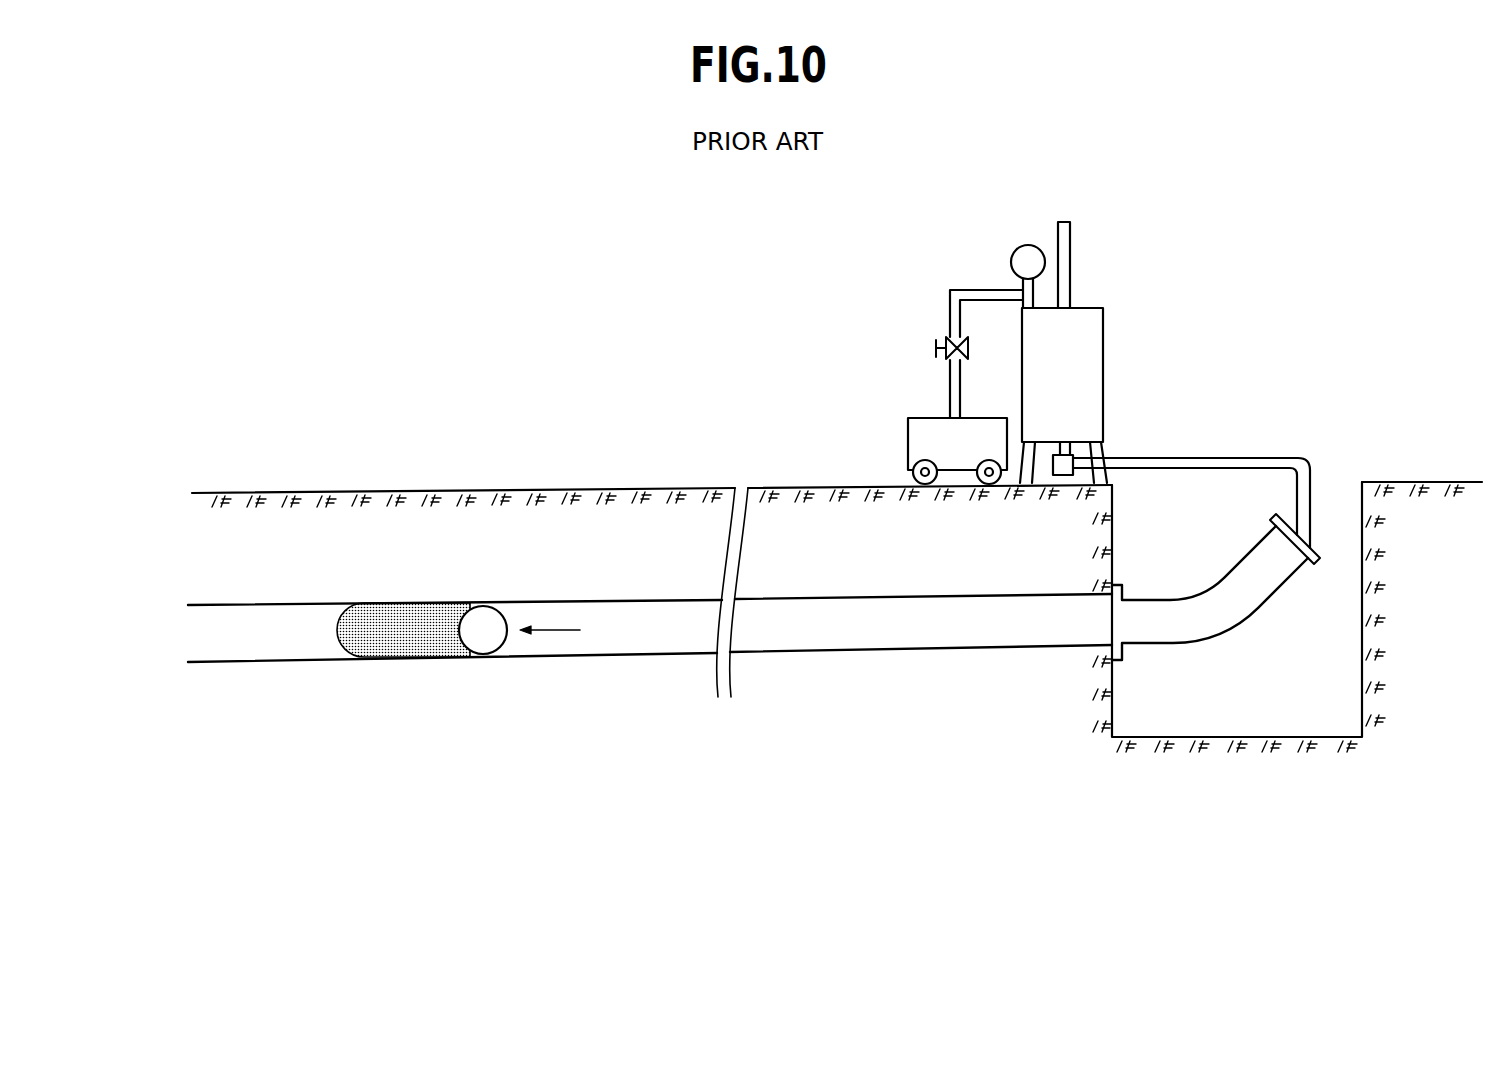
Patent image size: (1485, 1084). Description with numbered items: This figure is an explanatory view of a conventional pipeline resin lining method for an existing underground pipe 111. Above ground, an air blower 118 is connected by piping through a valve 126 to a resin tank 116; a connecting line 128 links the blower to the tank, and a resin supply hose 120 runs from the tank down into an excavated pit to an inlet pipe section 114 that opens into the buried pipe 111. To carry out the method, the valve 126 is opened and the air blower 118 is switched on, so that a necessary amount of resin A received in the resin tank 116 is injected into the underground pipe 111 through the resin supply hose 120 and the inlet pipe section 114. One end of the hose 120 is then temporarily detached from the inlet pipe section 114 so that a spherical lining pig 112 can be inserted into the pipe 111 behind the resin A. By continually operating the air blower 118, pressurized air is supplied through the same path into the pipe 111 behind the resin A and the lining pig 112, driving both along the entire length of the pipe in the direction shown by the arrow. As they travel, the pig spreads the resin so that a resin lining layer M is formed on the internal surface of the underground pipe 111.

The underground pipe 111 is at (245, 652).
The spherical lining pig 112 is at (485, 632).
The inlet pipe section 114 is at (1187, 618).
The resin tank 116 is at (1093, 307).
The air blower 118 is at (921, 422).
The resin supply hose 120 is at (1145, 462).
The valve 126 is at (934, 346).
The connecting pipe 128 is at (983, 289).
The resin A is at (370, 638).
The resin lining layer M is at (619, 640).